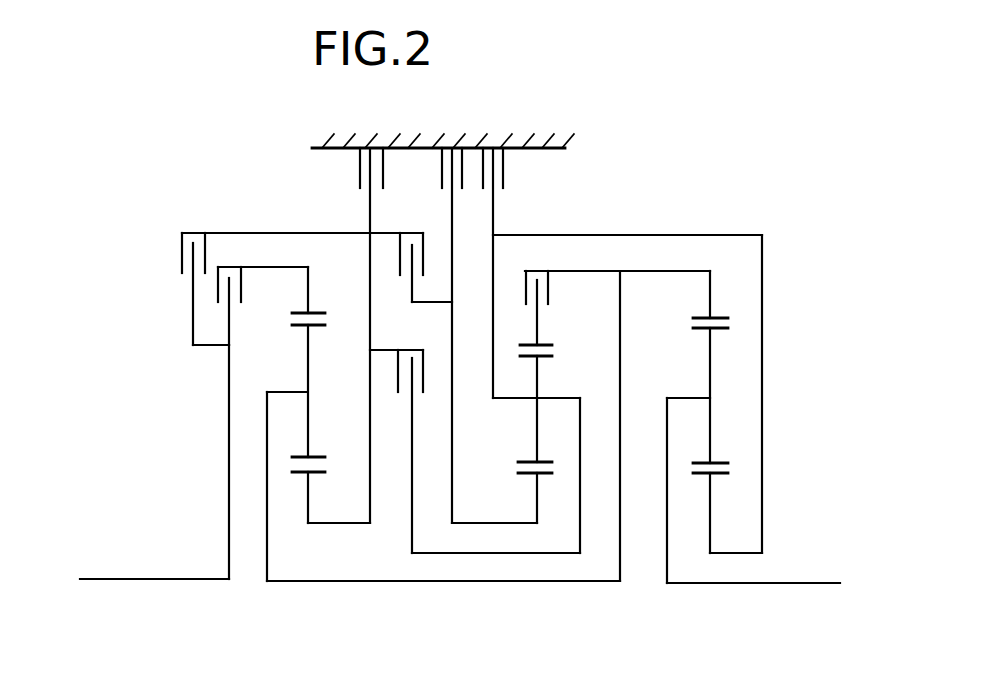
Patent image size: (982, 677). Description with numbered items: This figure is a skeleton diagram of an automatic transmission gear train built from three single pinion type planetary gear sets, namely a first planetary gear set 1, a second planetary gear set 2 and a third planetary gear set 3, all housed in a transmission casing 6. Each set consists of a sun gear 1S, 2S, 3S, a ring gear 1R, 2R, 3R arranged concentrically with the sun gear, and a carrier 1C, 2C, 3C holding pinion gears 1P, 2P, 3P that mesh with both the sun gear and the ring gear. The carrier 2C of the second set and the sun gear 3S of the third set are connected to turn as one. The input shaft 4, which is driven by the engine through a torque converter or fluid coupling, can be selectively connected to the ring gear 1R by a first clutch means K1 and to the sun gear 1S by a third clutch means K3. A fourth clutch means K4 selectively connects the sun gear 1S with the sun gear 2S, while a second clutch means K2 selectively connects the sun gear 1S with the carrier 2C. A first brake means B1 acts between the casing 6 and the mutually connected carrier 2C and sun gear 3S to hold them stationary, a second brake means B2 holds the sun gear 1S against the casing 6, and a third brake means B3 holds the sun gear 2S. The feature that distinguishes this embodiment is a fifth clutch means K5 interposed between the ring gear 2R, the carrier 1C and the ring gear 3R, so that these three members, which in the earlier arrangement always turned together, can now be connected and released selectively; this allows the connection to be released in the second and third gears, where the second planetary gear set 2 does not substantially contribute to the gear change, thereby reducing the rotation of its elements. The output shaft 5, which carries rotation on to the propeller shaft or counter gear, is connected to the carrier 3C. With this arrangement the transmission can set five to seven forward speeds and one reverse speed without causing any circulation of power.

The transmission casing 6 is at (483, 148).
The first brake means B1 is at (531, 273).
The second brake means B2 is at (350, 335).
The third brake means B3 is at (471, 335).
The first clutch means K1 is at (263, 294).
The second clutch means K2 is at (475, 438).
The third clutch means K3 is at (276, 274).
The fourth clutch means K4 is at (411, 255).
The fifth clutch means K5 is at (617, 295).
The first planetary gear set 1 is at (308, 548).
The second planetary gear set 2 is at (548, 543).
The third planetary gear set 3 is at (701, 570).
The ring gear 1R is at (318, 313).
The pinion gear 1P is at (316, 457).
The sun gear 1S is at (316, 473).
The carrier 1C is at (289, 392).
The ring gear 2R is at (546, 345).
The pinion gear 2P is at (542, 462).
The sun gear 2S is at (542, 474).
The carrier 2C is at (553, 398).
The ring gear 3R is at (712, 318).
The pinion gear 3P is at (716, 328).
The sun gear 3S is at (716, 474).
The carrier 3C is at (688, 398).
The input shaft 4 is at (137, 579).
The output shaft 5 is at (790, 583).